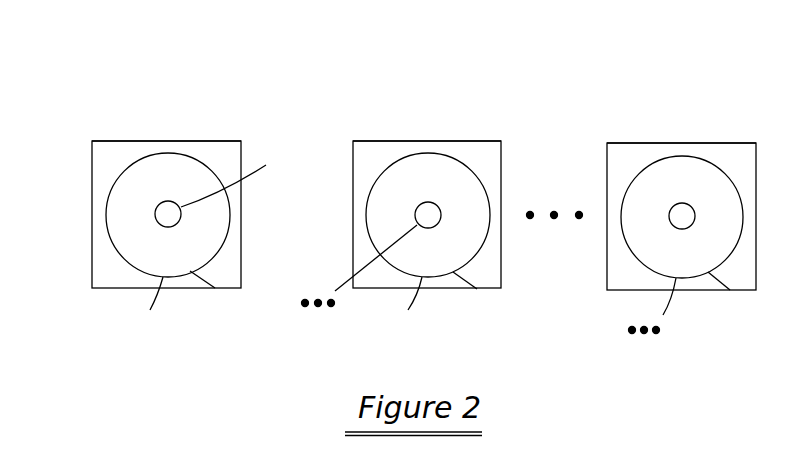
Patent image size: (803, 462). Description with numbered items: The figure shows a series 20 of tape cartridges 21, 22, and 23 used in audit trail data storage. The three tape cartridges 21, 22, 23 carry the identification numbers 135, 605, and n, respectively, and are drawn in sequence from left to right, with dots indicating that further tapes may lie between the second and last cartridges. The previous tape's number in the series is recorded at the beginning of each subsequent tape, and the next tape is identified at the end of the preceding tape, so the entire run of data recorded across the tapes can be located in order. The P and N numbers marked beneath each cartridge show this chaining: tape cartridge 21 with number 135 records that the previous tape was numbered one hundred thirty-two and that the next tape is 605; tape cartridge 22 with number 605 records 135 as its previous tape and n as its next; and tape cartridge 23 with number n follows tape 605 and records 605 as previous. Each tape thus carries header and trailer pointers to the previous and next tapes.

The series of tape cartridges 20 is at (92, 59).
The tape cartridge 21 is at (67, 205).
The tape cartridge 22 is at (364, 124).
The tape cartridge 23 is at (702, 125).
The identification number 135 is at (181, 141).
The identification number 605 is at (441, 141).
The identification number n is at (744, 143).